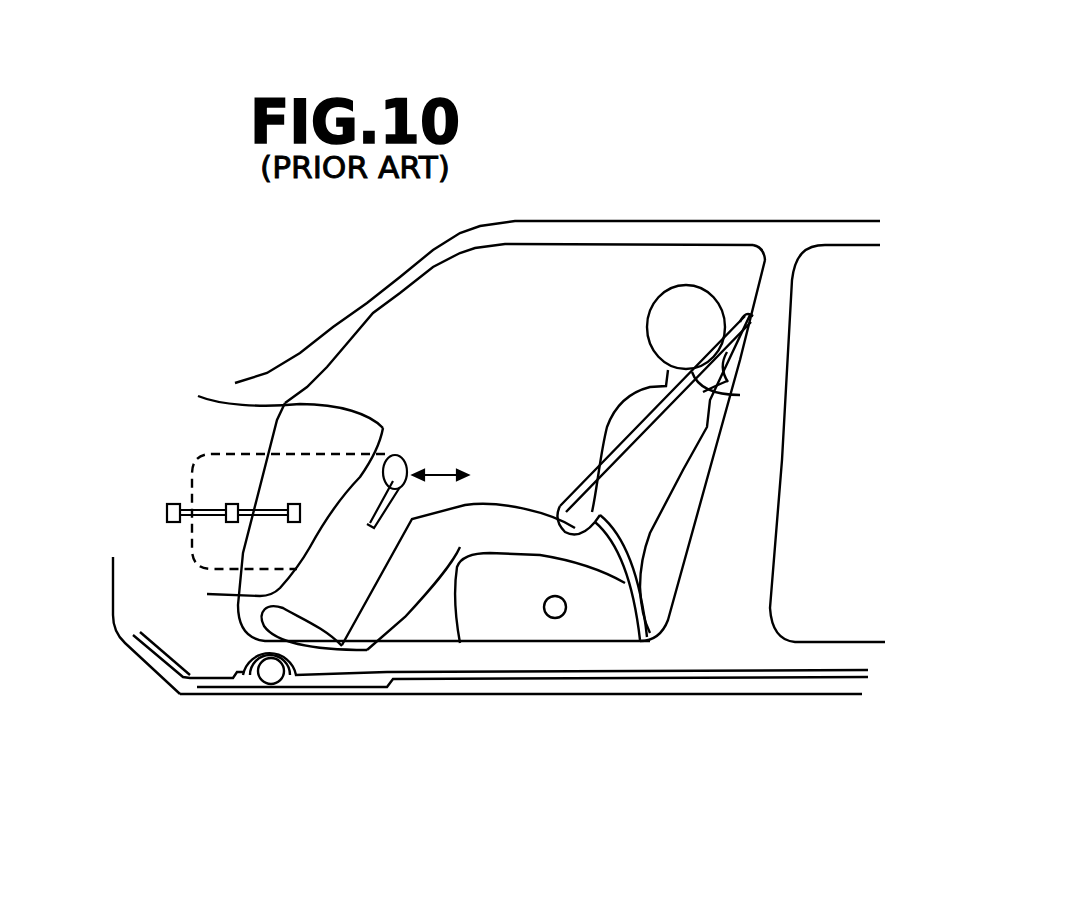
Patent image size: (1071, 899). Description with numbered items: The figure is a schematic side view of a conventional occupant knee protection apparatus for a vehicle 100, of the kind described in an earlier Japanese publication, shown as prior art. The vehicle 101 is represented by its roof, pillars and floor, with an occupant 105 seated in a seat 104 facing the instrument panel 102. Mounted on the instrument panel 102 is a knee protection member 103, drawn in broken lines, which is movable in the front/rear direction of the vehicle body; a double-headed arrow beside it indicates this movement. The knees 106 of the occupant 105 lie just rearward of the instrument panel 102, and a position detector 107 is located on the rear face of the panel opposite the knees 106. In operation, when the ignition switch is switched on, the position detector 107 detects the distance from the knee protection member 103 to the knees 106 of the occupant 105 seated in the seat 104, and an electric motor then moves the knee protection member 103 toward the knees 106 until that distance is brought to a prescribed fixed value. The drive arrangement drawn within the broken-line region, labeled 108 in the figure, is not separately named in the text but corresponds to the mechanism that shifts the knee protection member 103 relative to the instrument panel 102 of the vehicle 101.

The occupant knee protection apparatus for a vehicle 100 is at (177, 150).
The vehicle 101 is at (562, 223).
The instrument panel 102 is at (297, 430).
The knee protection member 103 is at (215, 485).
The seat 104 is at (613, 625).
The occupant 105 is at (663, 318).
The knees 106 is at (457, 520).
The position detector 107 is at (393, 455).
The actuator 108 is at (167, 510).